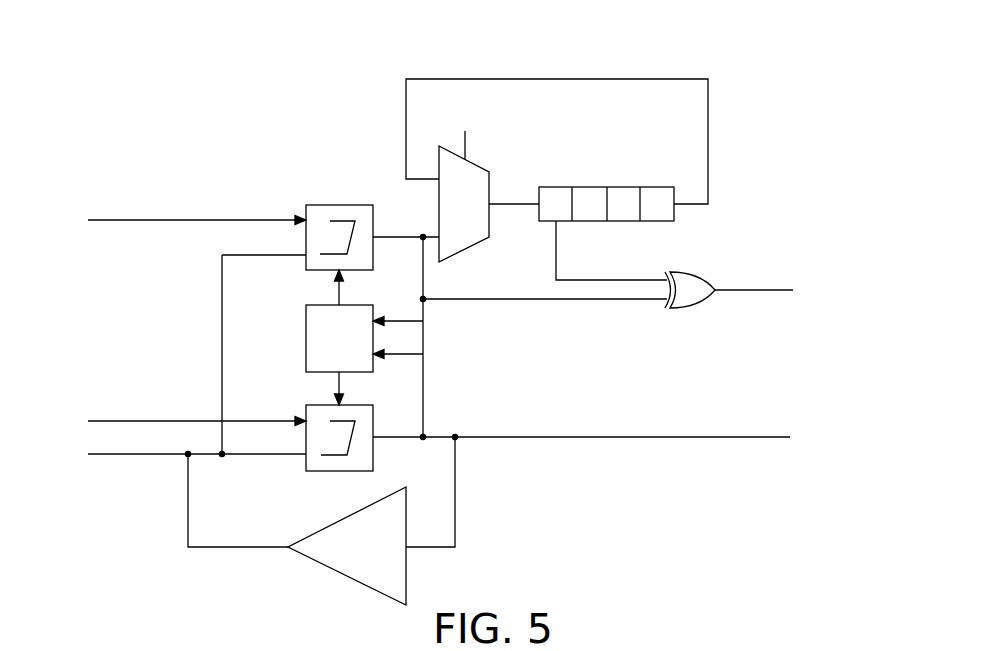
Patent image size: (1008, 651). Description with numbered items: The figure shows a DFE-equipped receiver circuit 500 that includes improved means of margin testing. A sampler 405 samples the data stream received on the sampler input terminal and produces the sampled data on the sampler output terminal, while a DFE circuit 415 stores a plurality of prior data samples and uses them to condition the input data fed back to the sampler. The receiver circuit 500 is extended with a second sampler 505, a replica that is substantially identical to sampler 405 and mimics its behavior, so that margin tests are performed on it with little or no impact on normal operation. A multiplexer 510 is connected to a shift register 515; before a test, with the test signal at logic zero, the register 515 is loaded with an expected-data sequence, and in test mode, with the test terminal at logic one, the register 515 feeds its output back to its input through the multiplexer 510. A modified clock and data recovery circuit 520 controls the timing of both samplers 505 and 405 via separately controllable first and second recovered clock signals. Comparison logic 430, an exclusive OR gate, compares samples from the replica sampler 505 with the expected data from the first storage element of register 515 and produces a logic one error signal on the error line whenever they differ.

The receiver circuit 500 is at (208, 60).
The second sampler 505 is at (345, 204).
The multiplexer 510 is at (482, 219).
The shift register 515 is at (591, 187).
The clock and data recovery circuit 520 is at (322, 364).
The sampler 405 is at (345, 472).
The DFE circuit 415 is at (350, 569).
The comparison logic 430 is at (700, 277).